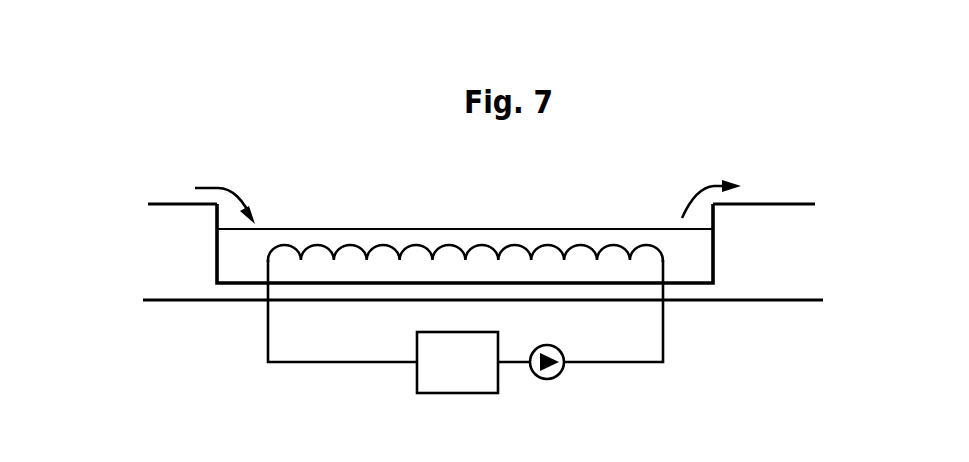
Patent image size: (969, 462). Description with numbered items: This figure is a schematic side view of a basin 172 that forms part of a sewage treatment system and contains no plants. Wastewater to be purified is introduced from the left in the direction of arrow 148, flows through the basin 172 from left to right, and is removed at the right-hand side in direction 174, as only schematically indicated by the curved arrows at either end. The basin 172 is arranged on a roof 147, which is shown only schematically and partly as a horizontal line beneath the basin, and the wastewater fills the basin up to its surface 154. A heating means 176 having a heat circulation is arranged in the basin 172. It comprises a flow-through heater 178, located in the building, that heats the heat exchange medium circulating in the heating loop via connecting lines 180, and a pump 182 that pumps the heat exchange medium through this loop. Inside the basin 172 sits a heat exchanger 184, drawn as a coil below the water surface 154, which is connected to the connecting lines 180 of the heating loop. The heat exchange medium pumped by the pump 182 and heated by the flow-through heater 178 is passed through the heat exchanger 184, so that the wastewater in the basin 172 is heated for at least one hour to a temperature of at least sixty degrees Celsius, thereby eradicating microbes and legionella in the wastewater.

The roof 147 is at (772, 300).
The arrow indicating wastewater inflow direction 148 is at (222, 188).
The surface of the wastewater 154 is at (330, 228).
The basin 172 is at (717, 249).
The direction of wastewater removal 174 is at (711, 186).
The heating means 176 is at (150, 374).
The flow-through heater 178 is at (478, 375).
The connecting lines 180 is at (266, 337).
The pump 182 is at (558, 376).
The heat exchanger 184 is at (488, 242).